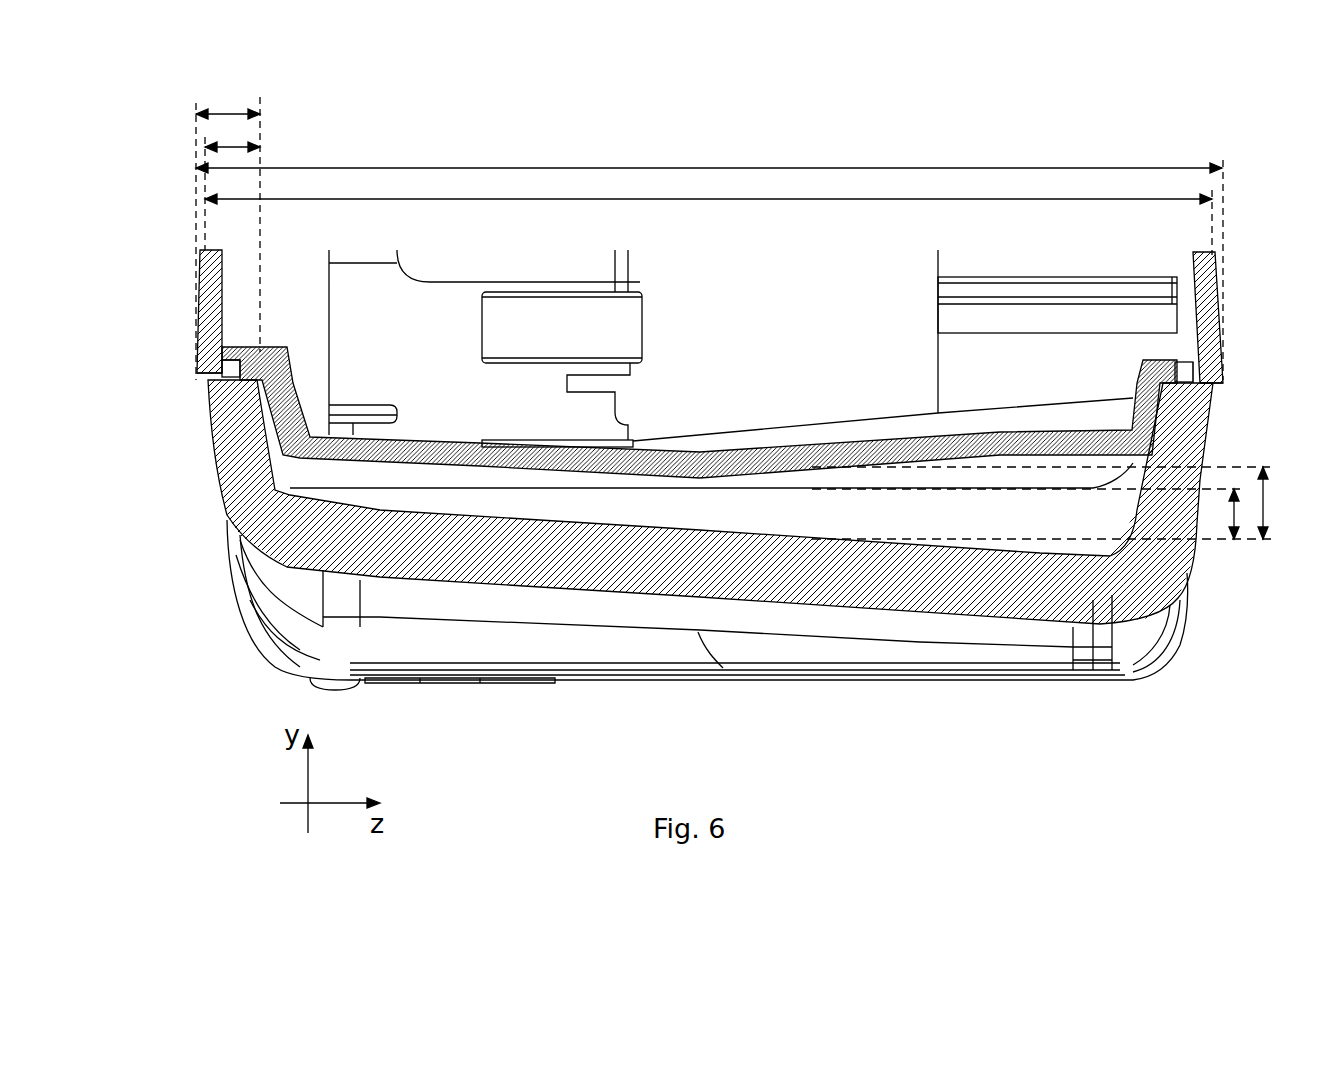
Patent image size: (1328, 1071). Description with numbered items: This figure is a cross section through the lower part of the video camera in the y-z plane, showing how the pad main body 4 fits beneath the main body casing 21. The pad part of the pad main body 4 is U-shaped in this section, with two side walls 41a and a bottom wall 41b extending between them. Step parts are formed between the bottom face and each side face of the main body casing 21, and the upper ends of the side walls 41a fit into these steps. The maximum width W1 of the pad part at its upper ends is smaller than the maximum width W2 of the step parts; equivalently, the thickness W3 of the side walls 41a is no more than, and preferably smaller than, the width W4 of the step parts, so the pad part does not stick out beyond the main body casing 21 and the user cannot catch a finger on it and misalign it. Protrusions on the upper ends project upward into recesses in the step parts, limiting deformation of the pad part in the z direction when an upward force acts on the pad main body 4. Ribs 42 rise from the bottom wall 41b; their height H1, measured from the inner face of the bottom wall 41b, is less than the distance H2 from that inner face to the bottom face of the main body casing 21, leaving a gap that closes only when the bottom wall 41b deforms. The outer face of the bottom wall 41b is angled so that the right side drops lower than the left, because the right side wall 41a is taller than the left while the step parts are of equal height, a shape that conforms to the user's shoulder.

The pad main body 4 is at (853, 630).
The main body casing 21 is at (197, 293).
The side wall 41a is at (218, 475).
The bottom wall 41b is at (678, 583).
The rib 42 is at (708, 500).
The maximum width of the pad part at the upper ends W1 is at (700, 200).
The maximum width of the step parts W2 is at (665, 167).
The thickness of the side walls W3 is at (233, 143).
The width of the step parts W4 is at (228, 112).
The distance from the inner face of the bottom wall to the upper ends of the ribs H1 is at (1234, 515).
The distance from the inner face of the bottom wall to the bottom face of the main b H2 is at (1263, 510).